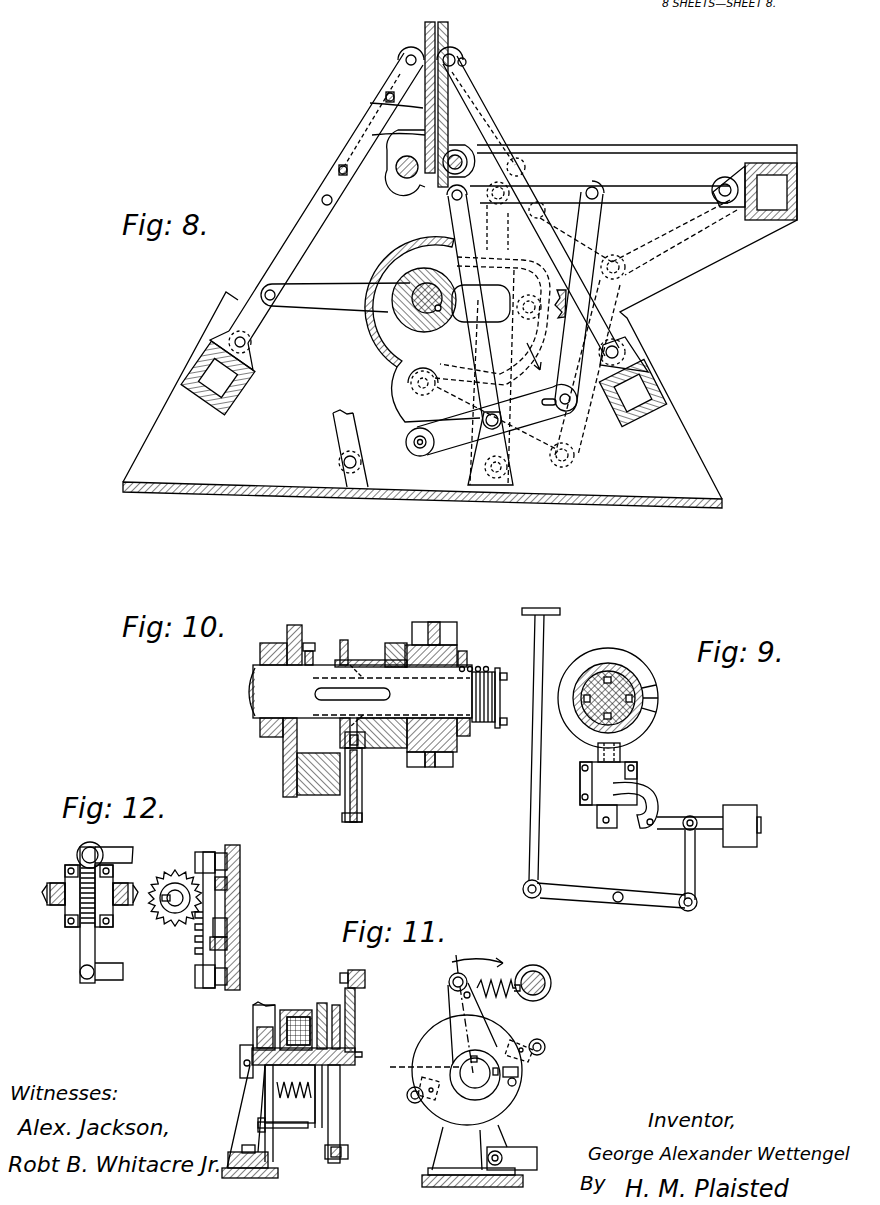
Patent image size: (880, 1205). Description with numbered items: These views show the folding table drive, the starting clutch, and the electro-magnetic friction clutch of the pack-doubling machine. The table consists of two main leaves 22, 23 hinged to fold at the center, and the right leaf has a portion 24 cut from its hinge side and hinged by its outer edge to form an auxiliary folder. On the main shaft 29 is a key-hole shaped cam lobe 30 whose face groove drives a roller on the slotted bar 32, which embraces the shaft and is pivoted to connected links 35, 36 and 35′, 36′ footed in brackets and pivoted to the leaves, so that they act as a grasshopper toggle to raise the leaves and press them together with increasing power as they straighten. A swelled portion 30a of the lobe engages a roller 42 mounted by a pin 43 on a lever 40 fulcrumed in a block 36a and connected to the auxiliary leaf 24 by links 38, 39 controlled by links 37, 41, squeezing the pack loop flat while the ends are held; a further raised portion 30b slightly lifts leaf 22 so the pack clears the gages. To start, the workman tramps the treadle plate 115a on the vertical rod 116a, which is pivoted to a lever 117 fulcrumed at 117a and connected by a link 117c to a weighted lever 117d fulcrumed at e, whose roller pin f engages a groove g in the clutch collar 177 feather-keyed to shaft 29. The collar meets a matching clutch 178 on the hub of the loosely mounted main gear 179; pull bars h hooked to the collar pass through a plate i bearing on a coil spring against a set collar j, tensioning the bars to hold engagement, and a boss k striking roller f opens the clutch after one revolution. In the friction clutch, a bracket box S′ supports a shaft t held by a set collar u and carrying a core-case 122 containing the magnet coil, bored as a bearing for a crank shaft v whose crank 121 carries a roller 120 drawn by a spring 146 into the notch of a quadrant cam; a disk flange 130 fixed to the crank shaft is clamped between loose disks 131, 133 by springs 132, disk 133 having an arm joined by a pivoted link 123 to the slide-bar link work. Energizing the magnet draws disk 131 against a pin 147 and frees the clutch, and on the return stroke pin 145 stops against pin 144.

In FIG. 8, the main leaf 22 is at (423, 108).
In FIG. 8, the main leaf 23 is at (449, 27).
In FIG. 8, the auxiliary leaf 24 is at (448, 117).
In FIG. 8, the main shaft 29 is at (430, 305).
In FIG. 10, the main shaft 29 is at (360, 696).
In FIG. 11, the main shaft 29 is at (540, 972).
In FIG. 8, the cam lobe 30 is at (386, 262).
In FIG. 8, the swelled portion 30a is at (395, 400).
In FIG. 8, the raised portion 30b is at (460, 266).
In FIG. 8, the slotted bar 32 is at (307, 305).
In FIG. 8, the link 35 is at (615, 322).
In FIG. 8, the link 35′ is at (280, 252).
In FIG. 8, the link 36 is at (500, 122).
In FIG. 8, the link 36′ is at (365, 132).
In FIG. 8, the block 36a is at (478, 460).
In FIG. 8, the link 37 is at (658, 203).
In FIG. 8, the link 38 is at (570, 205).
In FIG. 8, the link 39 is at (570, 325).
In FIG. 8, the lever 40 is at (450, 445).
In FIG. 8, the link 41 is at (447, 219).
In FIG. 8, the roller 42 is at (405, 443).
In FIG. 8, the pin 43 is at (410, 450).
In FIG. 10, the clutch collar 177 is at (350, 634).
In FIG. 9, the clutch collar 177 is at (620, 655).
In FIG. 10, the matching clutch 178 is at (398, 642).
In FIG. 10, the main gear 179 is at (452, 615).
In FIG. 10, the groove g is at (318, 645).
In FIG. 9, the hub g′ is at (644, 735).
In FIG. 10, the pull bars h is at (512, 722).
In FIG. 10, the plate i is at (502, 697).
In FIG. 10, the set collar j is at (470, 737).
In FIG. 10, the boss k is at (364, 700).
In FIG. 9, the boss k is at (658, 703).
In FIG. 10, the roller pin f is at (365, 745).
In FIG. 9, the roller pin f is at (622, 751).
In FIG. 9, the fulcrum e is at (645, 828).
In FIG. 9, the treadle plate 115a is at (541, 612).
In FIG. 9, the vertical rod 116a is at (534, 808).
In FIG. 9, the lever 117 is at (610, 895).
In FIG. 9, the fulcrum 117a is at (615, 902).
In FIG. 9, the link 117c is at (685, 872).
In FIG. 10, the weighted lever 117d is at (364, 815).
In FIG. 9, the weighted lever 117d is at (710, 815).
In FIG. 11, the roller 120 is at (365, 973).
In FIG. 11, the crank 121 is at (356, 1021).
In FIG. 11, the core-case 122 is at (300, 1002).
In FIG. 11, the pivoted link 123 is at (348, 1150).
In FIG. 11, the disk flange 130 is at (302, 1128).
In FIG. 11, the disk 131 is at (321, 1002).
In FIG. 11, the springs 132 is at (290, 1094).
In FIG. 11, the disk 133 is at (336, 1005).
In FIG. 11, the pin 144 is at (516, 1083).
In FIG. 11, the pin 145 is at (518, 1072).
In FIG. 11, the spring 146 is at (520, 1000).
In FIG. 11, the pin 147 is at (292, 1135).
In FIG. 11, the shaft t is at (240, 1058).
In FIG. 11, the set collar u is at (240, 1046).
In FIG. 11, the crank shaft v is at (362, 1058).
In FIG. 11, the bracket box S′ is at (245, 1112).